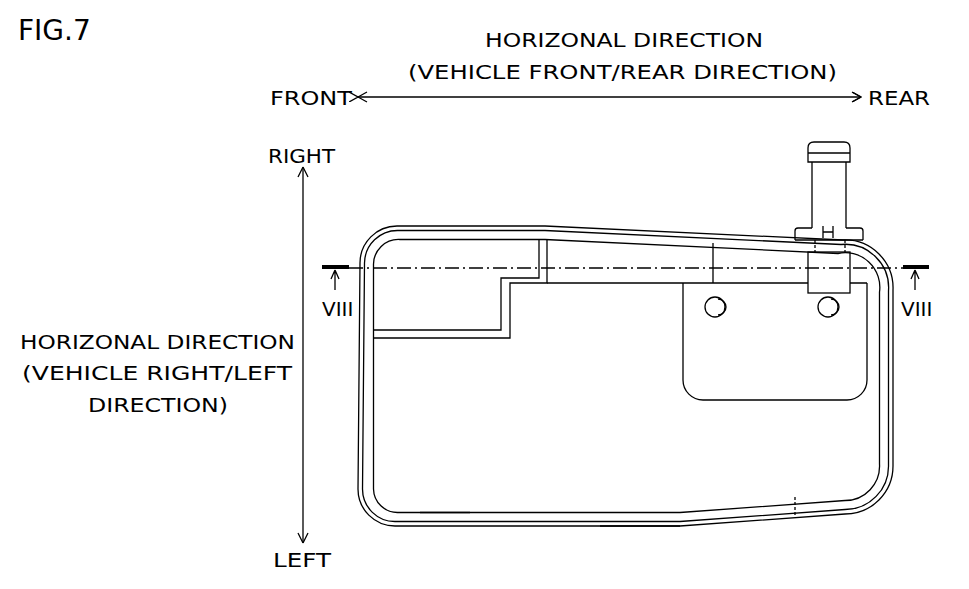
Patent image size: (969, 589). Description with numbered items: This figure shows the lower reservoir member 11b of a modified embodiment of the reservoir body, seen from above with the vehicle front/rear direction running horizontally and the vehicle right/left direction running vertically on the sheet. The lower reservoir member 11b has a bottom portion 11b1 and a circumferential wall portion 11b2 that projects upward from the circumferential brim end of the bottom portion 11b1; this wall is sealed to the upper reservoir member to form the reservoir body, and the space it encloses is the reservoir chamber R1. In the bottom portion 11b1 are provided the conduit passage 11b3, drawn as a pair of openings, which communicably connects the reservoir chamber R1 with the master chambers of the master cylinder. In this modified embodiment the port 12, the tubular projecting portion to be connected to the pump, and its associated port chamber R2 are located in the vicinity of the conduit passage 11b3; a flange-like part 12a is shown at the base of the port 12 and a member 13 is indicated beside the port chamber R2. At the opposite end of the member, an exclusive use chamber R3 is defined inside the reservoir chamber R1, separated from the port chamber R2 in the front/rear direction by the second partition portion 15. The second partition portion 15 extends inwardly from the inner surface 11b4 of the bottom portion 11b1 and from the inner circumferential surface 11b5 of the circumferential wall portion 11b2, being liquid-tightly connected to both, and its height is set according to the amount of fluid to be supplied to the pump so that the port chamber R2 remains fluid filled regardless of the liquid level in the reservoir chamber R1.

The lower reservoir member 11b is at (519, 190).
The bottom portion 11b1 is at (798, 520).
The circumferential wall portion 11b2 is at (680, 527).
The conduit passage 11b3 is at (832, 339).
The inner surface 11b4 is at (530, 447).
The inner circumferential surface 11b5 is at (463, 512).
The port 12 is at (816, 196).
The flange 12a is at (838, 238).
The sensor 13 is at (851, 287).
The second partition portion 15 is at (461, 338).
The reservoir chamber R1 is at (616, 456).
The port chamber R2 is at (845, 293).
The exclusive use chamber R3 is at (451, 316).